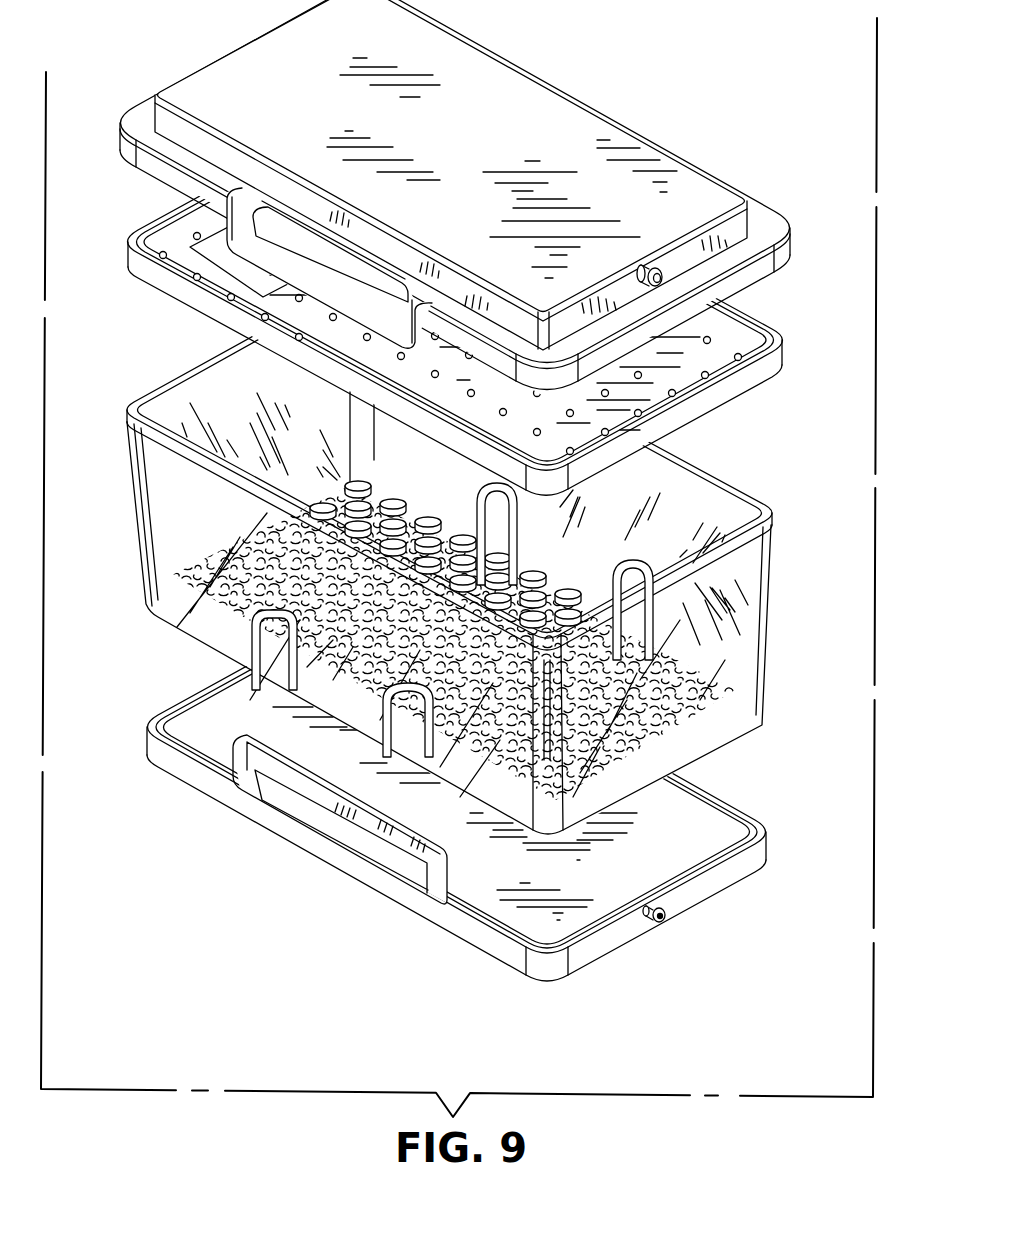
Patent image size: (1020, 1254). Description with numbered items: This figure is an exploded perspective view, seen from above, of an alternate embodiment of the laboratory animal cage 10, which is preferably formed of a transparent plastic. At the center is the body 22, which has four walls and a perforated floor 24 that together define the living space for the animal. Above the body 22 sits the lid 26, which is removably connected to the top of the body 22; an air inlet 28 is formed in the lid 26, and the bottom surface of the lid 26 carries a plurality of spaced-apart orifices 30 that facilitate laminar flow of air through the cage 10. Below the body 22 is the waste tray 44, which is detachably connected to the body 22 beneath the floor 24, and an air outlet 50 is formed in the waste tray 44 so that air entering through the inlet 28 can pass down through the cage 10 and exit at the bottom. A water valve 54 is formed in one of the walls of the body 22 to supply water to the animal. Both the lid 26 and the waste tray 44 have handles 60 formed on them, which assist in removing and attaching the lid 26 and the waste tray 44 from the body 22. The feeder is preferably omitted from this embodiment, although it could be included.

The cage 10 is at (100, 600).
The body 22 is at (167, 516).
The perforated floor 24 is at (573, 593).
The lid 26 is at (675, 157).
The air inlet 28 is at (663, 270).
The orifices 30 is at (705, 375).
The waste tray 44 is at (746, 870).
The air outlet 50 is at (663, 917).
The water valve 54 is at (680, 697).
The handles 60 is at (226, 195).